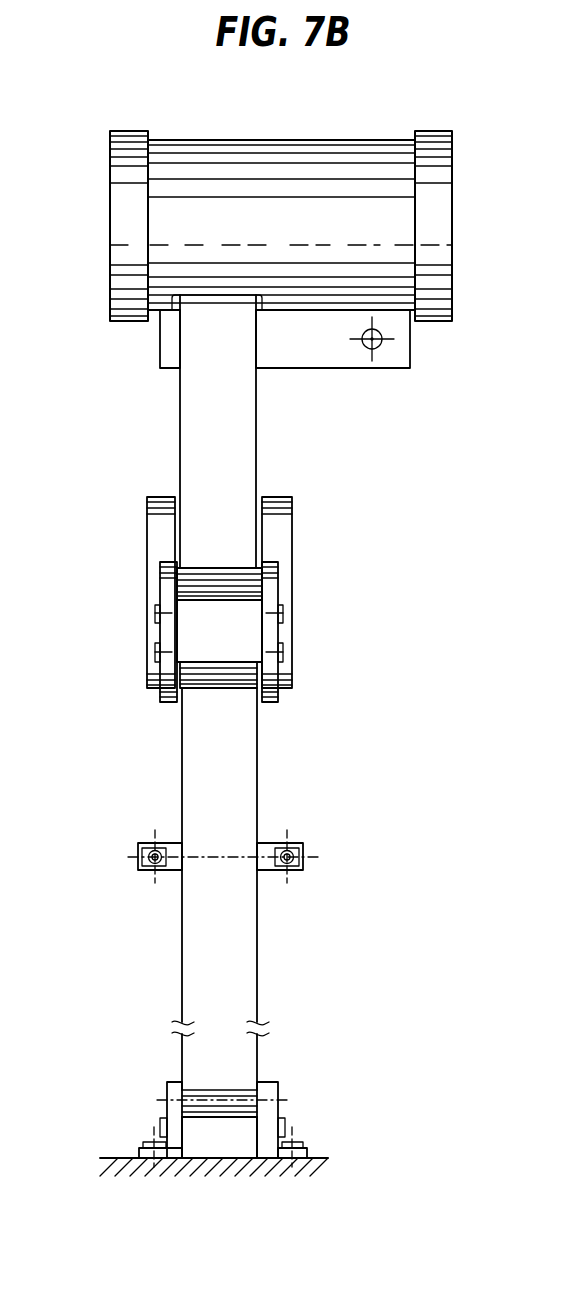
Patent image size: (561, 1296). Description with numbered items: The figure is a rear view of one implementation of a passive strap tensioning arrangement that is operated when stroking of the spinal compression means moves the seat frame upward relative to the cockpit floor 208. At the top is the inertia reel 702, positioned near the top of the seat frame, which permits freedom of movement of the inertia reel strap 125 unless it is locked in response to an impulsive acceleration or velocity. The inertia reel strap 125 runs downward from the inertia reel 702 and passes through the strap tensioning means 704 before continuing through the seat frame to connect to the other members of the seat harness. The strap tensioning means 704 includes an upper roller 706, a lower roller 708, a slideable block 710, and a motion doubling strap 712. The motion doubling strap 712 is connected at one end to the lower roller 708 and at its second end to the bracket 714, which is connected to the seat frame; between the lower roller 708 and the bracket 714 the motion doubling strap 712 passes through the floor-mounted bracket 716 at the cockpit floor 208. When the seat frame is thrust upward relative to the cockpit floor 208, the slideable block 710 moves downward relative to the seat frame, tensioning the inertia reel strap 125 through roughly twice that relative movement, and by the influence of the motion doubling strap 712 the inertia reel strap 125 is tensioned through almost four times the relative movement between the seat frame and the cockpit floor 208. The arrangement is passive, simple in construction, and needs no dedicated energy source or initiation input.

The inertia reel 702 is at (255, 167).
The inertia reel strap 125 is at (180, 441).
The strap tensioning means 704 is at (124, 536).
The upper roller 706 is at (292, 556).
The lower roller 708 is at (283, 650).
The slideable block 710 is at (157, 628).
The motion doubling strap 712 is at (258, 759).
The bracket 714 is at (291, 843).
The floor-mounted bracket 716 is at (286, 1090).
The cockpit floor 208 is at (106, 1158).